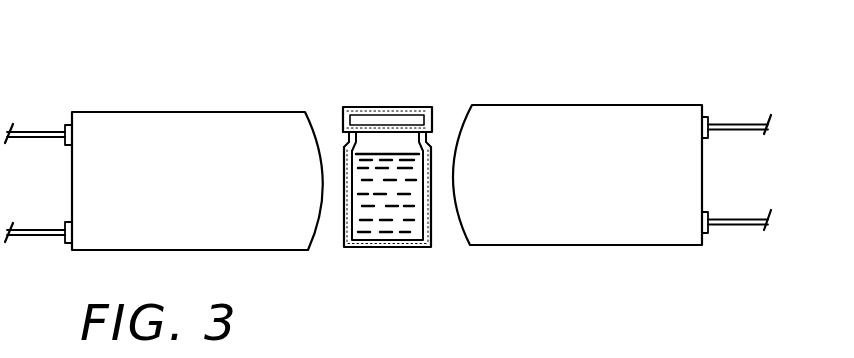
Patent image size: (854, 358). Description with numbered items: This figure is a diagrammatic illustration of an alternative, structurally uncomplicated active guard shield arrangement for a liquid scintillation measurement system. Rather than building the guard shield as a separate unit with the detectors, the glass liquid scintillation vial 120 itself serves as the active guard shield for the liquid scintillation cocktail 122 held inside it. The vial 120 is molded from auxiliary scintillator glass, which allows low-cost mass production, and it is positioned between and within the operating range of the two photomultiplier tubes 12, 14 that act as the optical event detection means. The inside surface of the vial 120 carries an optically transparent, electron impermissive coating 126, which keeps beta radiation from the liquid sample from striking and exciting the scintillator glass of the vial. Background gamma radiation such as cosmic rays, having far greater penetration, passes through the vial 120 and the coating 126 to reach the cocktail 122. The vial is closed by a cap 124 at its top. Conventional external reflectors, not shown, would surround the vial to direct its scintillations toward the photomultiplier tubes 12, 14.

The photomultiplier tube 12 is at (180, 120).
The photomultiplier tube 14 is at (569, 118).
The liquid scintillation vial 120 is at (402, 152).
The liquid scintillation cocktail 122 is at (413, 232).
The cap 124 is at (350, 107).
The electron impermissive coating 126 is at (407, 150).